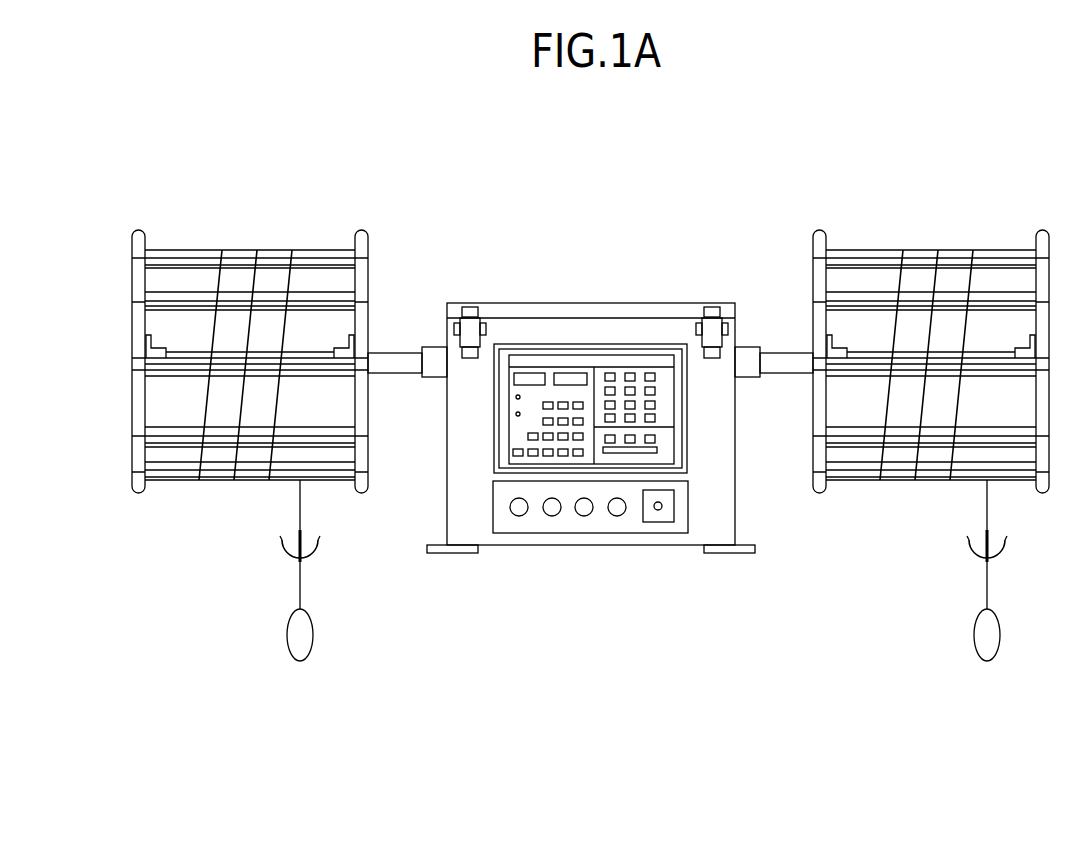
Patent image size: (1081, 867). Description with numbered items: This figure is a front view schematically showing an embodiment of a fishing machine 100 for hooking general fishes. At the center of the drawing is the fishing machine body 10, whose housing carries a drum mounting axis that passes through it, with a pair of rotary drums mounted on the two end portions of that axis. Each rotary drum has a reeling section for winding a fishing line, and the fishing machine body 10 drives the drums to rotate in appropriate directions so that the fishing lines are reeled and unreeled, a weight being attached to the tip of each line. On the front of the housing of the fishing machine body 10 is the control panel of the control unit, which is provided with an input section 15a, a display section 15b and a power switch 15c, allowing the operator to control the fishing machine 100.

The fishing machine 100 is at (752, 165).
The fishing machine body 10 is at (597, 415).
The input section 15a is at (660, 415).
The display section 15b is at (517, 425).
The power switch 15c is at (658, 522).